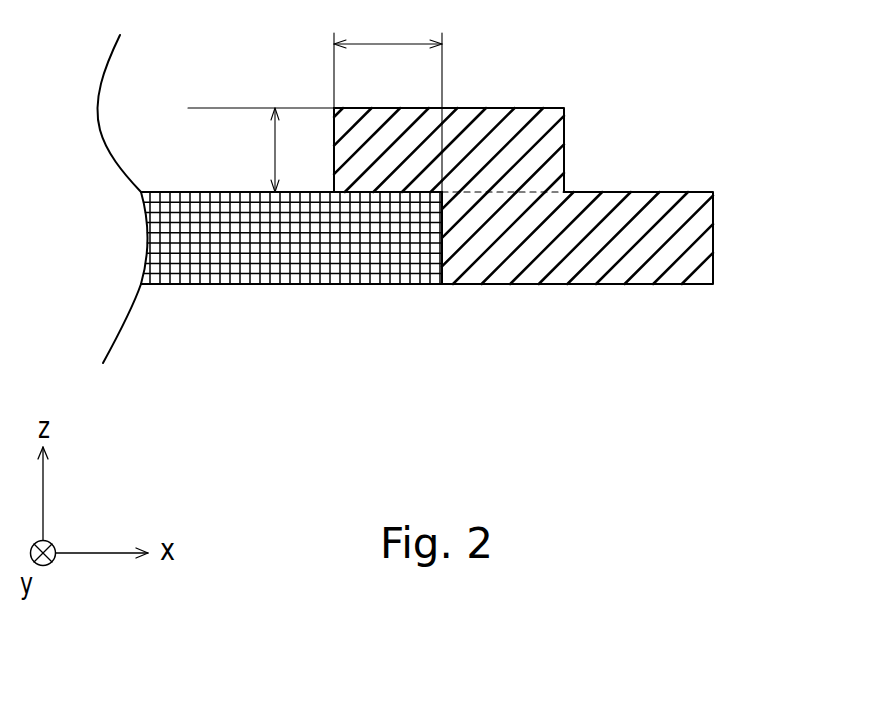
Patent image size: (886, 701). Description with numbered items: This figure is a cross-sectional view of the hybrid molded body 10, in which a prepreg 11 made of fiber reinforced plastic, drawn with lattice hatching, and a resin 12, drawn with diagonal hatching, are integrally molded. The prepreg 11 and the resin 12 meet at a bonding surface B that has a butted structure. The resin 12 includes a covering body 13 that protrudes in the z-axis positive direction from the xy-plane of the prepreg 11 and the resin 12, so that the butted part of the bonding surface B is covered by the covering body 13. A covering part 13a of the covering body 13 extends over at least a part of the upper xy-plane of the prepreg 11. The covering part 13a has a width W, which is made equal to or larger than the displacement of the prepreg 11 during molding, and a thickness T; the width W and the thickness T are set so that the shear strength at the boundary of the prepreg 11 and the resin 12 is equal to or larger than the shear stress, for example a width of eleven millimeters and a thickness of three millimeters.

The hybrid molded body 10 is at (712, 72).
The prepreg 11 is at (277, 247).
The resin 12 is at (673, 268).
The covering body 13 is at (523, 160).
The covering part 13a is at (388, 150).
The bonding surface B is at (441, 289).
The thickness T is at (261, 150).
The width W is at (388, 100).